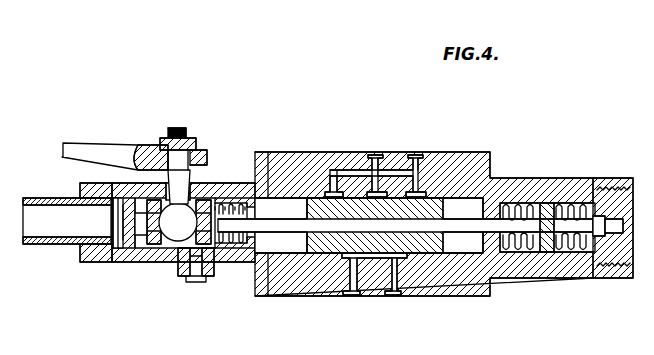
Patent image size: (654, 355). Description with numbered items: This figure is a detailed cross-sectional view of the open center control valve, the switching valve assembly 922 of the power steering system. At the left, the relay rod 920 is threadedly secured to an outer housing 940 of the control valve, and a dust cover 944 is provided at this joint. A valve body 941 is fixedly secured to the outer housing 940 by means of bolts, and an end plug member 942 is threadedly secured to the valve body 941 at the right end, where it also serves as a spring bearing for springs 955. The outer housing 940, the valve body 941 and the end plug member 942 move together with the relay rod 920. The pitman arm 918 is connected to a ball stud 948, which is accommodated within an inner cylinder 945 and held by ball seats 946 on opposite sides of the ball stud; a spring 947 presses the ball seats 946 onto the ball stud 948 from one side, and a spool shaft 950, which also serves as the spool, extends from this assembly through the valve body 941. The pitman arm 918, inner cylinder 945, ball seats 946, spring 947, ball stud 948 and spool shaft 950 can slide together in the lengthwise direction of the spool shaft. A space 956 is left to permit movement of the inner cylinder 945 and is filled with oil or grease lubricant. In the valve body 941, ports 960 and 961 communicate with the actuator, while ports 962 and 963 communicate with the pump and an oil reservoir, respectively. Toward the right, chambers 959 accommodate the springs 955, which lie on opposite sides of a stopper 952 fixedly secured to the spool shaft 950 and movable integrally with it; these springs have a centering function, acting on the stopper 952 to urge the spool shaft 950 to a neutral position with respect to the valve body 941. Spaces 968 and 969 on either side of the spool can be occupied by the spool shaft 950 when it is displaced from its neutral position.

The valve assembly 922 is at (578, 86).
The pitman arm 918 is at (100, 140).
The ball stud 948 is at (173, 128).
The spring 947 is at (228, 200).
The space 968 is at (286, 200).
The port 963 is at (376, 156).
The port 962 is at (412, 156).
The space 969 is at (462, 205).
The chambers 959 is at (518, 203).
The stopper 952 is at (552, 200).
The dust cover 944 is at (112, 205).
The relay rod 920 is at (45, 246).
The space 956 is at (116, 256).
The inner cylinder 945 is at (128, 262).
The ball seats 946 is at (152, 262).
The outer housing 940 is at (258, 297).
The port 960 is at (349, 297).
The port 961 is at (392, 297).
The valve body 941 is at (420, 297).
The spool shaft 950 is at (438, 258).
The springs 955 is at (576, 250).
The end plug member 942 is at (612, 280).